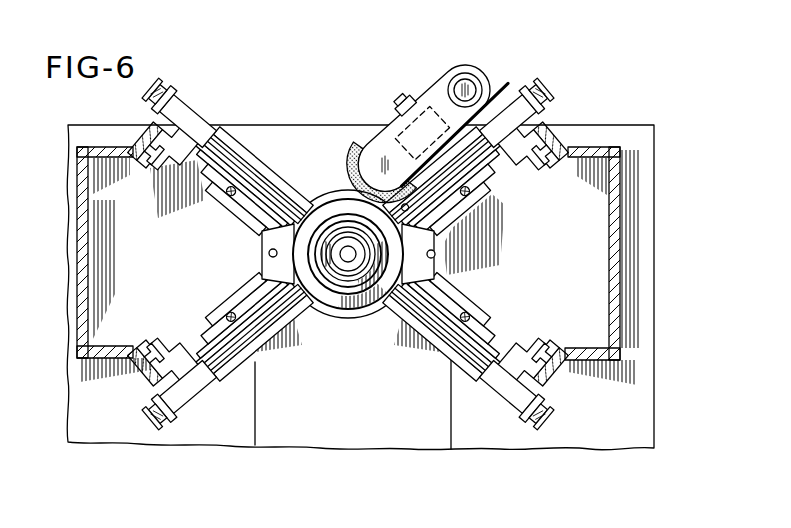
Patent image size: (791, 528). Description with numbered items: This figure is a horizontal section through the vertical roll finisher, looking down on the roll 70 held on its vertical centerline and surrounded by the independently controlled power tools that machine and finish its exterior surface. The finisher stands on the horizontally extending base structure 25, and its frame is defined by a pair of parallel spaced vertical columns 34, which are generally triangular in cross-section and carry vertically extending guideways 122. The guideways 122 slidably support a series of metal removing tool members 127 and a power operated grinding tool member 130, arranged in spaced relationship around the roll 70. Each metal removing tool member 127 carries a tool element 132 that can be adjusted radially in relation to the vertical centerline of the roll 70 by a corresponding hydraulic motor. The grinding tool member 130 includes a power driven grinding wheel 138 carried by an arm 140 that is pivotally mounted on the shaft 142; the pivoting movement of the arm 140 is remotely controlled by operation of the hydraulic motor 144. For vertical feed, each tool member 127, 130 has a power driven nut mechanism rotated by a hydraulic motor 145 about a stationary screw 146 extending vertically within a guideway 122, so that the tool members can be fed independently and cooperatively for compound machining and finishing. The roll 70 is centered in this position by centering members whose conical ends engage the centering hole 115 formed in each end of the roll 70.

The base structure 25 is at (72, 385).
The vertical columns 34 is at (82, 256).
The roll 70 is at (330, 188).
The centering hole 115 is at (348, 262).
The guideways 122 is at (208, 187).
The metal removing tool members 127 is at (245, 145).
The power operated grinding tool member 130 is at (429, 80).
The tool element 132 is at (333, 288).
The grinding wheel 138 is at (352, 152).
The arm 140 is at (421, 104).
The shaft 142 is at (466, 89).
The hydraulic motor 144 is at (397, 98).
The hydraulic motor 145 is at (168, 96).
The stationary screw 146 is at (228, 196).